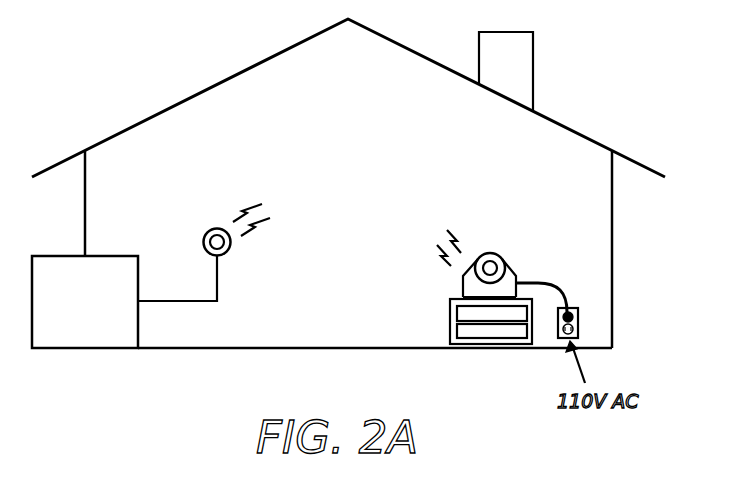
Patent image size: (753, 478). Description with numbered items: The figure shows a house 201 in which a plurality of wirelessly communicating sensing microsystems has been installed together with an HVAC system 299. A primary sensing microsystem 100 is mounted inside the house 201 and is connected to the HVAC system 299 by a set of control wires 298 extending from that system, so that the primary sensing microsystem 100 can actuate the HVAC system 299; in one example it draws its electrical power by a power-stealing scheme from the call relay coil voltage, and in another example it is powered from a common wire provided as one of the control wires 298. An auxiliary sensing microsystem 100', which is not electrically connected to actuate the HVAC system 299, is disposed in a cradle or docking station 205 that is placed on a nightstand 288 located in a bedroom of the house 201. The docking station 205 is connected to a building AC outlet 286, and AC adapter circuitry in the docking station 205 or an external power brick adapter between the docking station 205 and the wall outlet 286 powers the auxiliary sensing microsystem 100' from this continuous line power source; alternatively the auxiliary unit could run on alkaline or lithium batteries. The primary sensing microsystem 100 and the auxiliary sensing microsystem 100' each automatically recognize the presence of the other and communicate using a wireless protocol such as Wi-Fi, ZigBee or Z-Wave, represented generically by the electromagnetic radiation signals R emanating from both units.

The house 201 is at (207, 88).
The HVAC system 299 is at (85, 302).
The primary sensing microsystem 100 is at (171, 238).
The control wires 298 is at (218, 285).
The electromagnetic radiation signals R is at (243, 203).
The auxiliary sensing microsystem 100' is at (503, 235).
The docking station 205 is at (510, 267).
The nightstand 288 is at (448, 319).
The AC outlet 286 is at (579, 315).